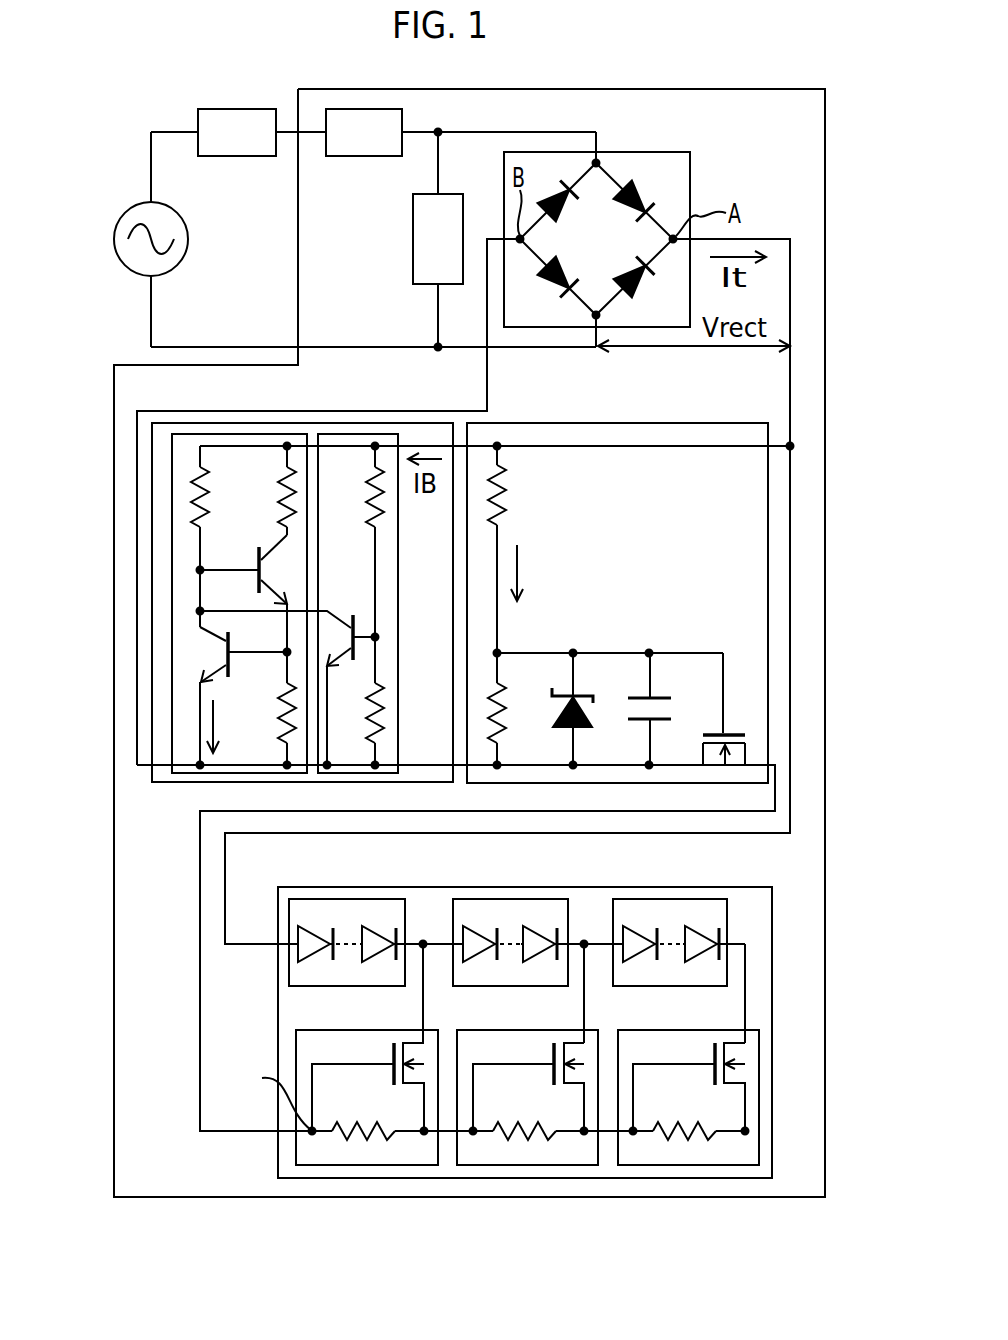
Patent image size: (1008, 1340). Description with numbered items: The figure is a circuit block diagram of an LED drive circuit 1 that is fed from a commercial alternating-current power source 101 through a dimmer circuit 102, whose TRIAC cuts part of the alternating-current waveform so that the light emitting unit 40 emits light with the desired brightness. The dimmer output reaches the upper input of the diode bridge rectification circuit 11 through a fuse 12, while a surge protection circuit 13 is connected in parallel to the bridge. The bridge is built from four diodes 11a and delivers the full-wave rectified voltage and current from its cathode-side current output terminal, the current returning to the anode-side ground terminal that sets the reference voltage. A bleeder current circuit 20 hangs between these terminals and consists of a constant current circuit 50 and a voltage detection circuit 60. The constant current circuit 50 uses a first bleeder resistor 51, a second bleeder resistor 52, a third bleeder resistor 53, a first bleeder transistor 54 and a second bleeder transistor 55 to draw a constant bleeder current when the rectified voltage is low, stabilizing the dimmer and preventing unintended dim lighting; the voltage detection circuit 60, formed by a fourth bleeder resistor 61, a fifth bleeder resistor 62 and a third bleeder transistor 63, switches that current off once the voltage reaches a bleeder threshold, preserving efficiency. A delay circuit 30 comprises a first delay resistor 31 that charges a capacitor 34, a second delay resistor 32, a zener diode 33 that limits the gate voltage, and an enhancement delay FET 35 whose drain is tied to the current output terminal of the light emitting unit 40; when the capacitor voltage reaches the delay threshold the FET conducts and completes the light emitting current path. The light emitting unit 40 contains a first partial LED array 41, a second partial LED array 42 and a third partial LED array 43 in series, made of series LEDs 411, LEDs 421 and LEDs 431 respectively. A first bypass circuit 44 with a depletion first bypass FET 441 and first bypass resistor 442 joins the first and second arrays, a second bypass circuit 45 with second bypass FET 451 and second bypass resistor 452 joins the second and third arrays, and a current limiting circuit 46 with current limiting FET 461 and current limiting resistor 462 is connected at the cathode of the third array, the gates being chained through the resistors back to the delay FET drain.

The LED drive circuit 1 is at (113, 577).
The commercial alternating-current power source 101 is at (185, 250).
The dimmer circuit 102 is at (238, 156).
The fuse 12 is at (360, 156).
The surge protection circuit 13 is at (413, 272).
The diode bridge rectification circuit 11 is at (633, 219).
The diode 11a is at (640, 188).
The bleeder current circuit 20 is at (170, 782).
The constant current circuit 50 is at (245, 434).
The first bleeder resistor 51 is at (208, 490).
The second bleeder resistor 52 is at (297, 495).
The third bleeder resistor 53 is at (280, 723).
The first bleeder transistor 54 is at (252, 562).
The second bleeder transistor 55 is at (232, 641).
The voltage detection circuit 60 is at (368, 434).
The fourth bleeder resistor 61 is at (385, 512).
The fifth bleeder resistor 62 is at (380, 686).
The third bleeder transistor 63 is at (343, 613).
The delay circuit 30 is at (667, 423).
The first delay resistor 31 is at (507, 490).
The second delay resistor 32 is at (507, 732).
The zener diode 33 is at (585, 712).
The capacitor 34 is at (673, 710).
The delay FET 35 is at (738, 728).
The light emitting unit 40 is at (278, 1160).
The first partial LED array 41 is at (355, 912).
The second partial LED array 42 is at (520, 912).
The third partial LED array 43 is at (680, 912).
The LED 411 is at (315, 925).
The LED 421 is at (480, 925).
The LED 431 is at (640, 925).
The first bypass circuit 44 is at (378, 1030).
The second bypass circuit 45 is at (540, 1030).
The current limiting circuit 46 is at (700, 1030).
The first bypass FET 441 is at (385, 1072).
The second bypass FET 451 is at (546, 1074).
The current limiting FET 461 is at (707, 1074).
The first bypass resistor 442 is at (350, 1143).
The second bypass resistor 452 is at (510, 1143).
The current limiting resistor 462 is at (670, 1143).